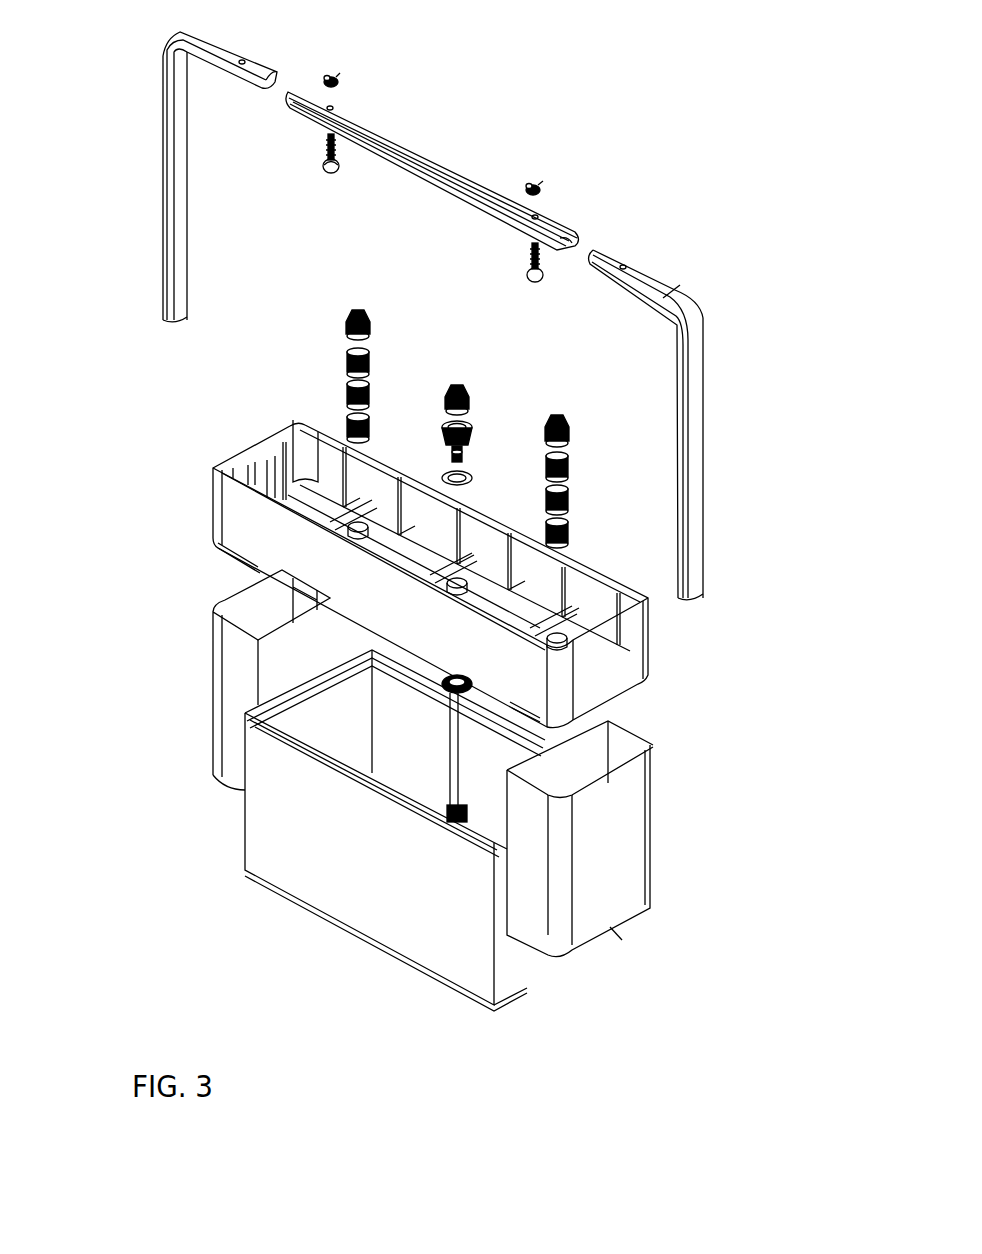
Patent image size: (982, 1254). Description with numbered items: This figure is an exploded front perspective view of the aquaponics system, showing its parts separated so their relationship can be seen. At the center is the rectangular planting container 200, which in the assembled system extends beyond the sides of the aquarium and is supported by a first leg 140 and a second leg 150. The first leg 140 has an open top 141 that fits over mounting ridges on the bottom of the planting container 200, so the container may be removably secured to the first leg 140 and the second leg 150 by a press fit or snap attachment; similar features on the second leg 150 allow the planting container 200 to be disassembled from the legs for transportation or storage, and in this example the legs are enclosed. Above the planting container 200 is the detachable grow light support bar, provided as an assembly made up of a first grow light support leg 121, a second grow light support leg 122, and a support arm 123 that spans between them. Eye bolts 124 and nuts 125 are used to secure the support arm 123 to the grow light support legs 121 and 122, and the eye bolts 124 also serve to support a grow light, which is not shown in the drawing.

The first grow light support leg 121 is at (685, 425).
The second grow light support leg 122 is at (186, 177).
The support arm 123 is at (432, 171).
The eye bolts 124 is at (326, 171).
The nuts 125 is at (543, 180).
The first leg 140 is at (615, 822).
The open top 141 is at (613, 743).
The second leg 150 is at (417, 790).
The planting container 200 is at (430, 574).